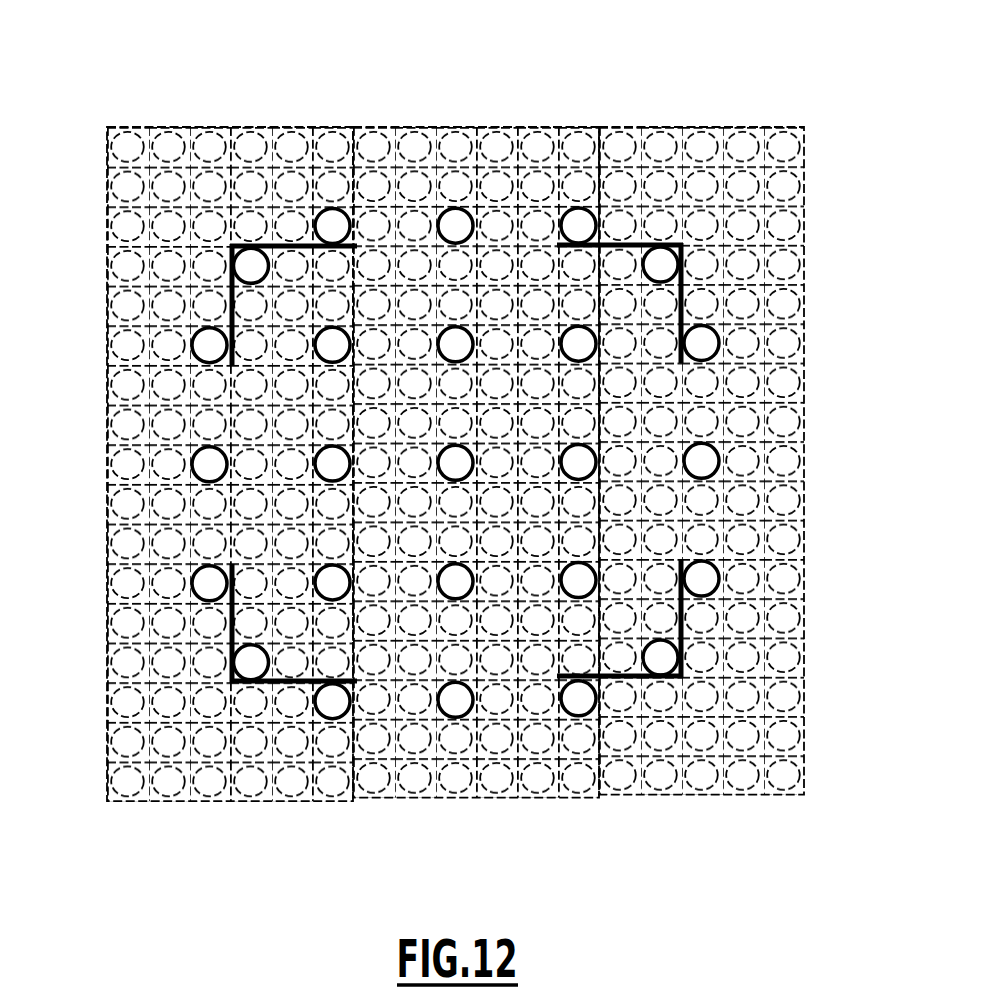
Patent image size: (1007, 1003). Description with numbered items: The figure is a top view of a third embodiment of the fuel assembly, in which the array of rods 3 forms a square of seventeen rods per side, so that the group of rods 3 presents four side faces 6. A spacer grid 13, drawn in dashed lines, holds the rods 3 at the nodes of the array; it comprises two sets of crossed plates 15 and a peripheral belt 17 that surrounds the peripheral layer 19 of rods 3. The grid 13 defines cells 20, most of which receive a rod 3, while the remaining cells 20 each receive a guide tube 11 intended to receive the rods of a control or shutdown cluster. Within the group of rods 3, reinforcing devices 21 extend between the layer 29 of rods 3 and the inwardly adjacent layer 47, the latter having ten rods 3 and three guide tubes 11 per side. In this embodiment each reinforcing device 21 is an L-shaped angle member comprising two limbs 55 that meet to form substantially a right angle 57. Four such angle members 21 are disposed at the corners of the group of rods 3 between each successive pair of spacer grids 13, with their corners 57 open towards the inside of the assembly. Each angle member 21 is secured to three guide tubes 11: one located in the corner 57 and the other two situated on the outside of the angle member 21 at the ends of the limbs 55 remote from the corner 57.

The rod 3 is at (133, 128).
The side face 6 is at (230, 112).
The guide tube 11 is at (352, 210).
The spacer grid 13 is at (272, 88).
The crossed plates 15 is at (320, 128).
The peripheral belt 17 is at (585, 127).
The peripheral layer 19 is at (640, 122).
The cell 20 is at (105, 130).
The reinforcing device 21 is at (696, 274).
The layer of rods 29 is at (668, 172).
The inwardly adjacent layer 47 is at (498, 224).
The limb 55 is at (303, 244).
The right angle 57 is at (719, 243).